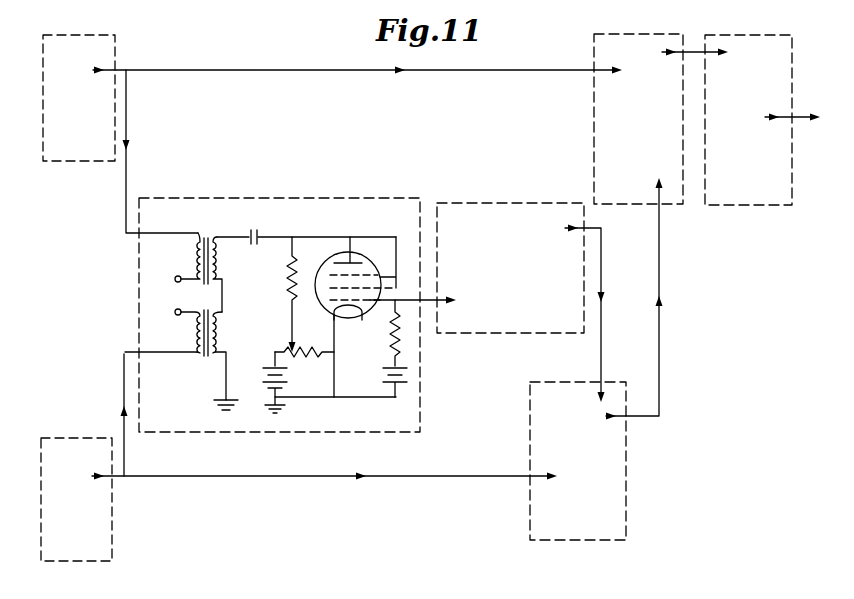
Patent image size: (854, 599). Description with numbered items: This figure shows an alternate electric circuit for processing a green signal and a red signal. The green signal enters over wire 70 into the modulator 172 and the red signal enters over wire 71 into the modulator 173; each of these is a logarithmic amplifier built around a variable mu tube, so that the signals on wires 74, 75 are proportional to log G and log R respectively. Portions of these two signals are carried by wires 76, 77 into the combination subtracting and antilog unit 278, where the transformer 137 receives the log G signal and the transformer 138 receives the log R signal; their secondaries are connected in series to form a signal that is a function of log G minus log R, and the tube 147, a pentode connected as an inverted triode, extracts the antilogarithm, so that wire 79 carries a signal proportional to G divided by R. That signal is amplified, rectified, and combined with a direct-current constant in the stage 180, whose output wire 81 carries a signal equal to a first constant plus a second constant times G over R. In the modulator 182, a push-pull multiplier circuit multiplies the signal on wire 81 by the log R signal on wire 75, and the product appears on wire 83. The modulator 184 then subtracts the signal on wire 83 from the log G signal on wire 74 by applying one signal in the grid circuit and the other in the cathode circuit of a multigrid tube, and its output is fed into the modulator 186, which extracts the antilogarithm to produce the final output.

The wire 70 is at (71, 85).
The wire 71 is at (68, 487).
The wire 74 is at (232, 70).
The wire 75 is at (232, 477).
The wire 76 is at (128, 118).
The wire 77 is at (122, 384).
The wire 79 is at (431, 304).
The output wire 81 is at (603, 245).
The wire 83 is at (661, 279).
The transformer 137 is at (225, 258).
The transformer 138 is at (223, 316).
The tube 147 is at (333, 259).
The modulator 172 is at (42, 19).
The modulator 173 is at (30, 432).
The amplifier and rectifier unit 180 is at (510, 268).
The modulator 182 is at (578, 461).
The modulator 184 is at (661, 119).
The modulator 186 is at (762, 120).
The combination subtracting and antilog unit 278 is at (420, 352).